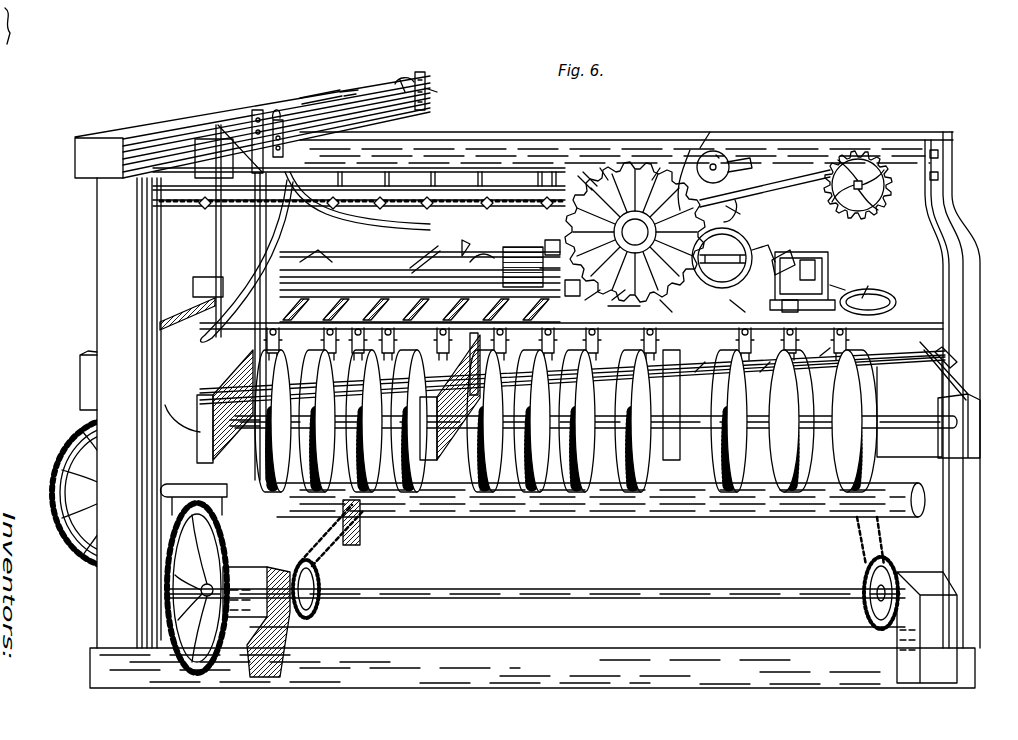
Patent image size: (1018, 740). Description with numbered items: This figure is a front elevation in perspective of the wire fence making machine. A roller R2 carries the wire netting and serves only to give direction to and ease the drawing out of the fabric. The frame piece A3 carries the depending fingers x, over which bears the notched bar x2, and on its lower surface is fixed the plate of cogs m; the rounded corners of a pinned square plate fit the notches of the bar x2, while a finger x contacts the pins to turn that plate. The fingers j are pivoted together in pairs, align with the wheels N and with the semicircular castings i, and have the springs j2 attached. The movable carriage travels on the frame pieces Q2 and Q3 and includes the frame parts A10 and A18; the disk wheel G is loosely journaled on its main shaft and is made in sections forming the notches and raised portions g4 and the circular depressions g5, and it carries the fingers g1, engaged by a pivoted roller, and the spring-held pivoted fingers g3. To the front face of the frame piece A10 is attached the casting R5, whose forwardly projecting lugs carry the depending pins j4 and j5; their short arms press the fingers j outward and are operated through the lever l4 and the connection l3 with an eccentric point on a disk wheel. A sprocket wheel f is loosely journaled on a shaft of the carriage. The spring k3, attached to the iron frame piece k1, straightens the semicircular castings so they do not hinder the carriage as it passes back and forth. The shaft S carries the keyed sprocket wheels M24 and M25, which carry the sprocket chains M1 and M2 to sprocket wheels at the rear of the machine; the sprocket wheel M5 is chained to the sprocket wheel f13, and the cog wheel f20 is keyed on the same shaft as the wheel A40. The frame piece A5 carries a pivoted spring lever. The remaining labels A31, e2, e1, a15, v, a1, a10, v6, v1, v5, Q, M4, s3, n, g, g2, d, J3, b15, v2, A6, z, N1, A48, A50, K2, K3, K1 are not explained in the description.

The frame A31 is at (525, 382).
The frame piece A3 is at (487, 152).
The main frame part of carriage A18 is at (965, 242).
The depending fingers x is at (483, 176).
The notched bar x2 is at (508, 198).
The bracket e2 is at (256, 126).
The link e1 is at (214, 238).
The arm a15 is at (248, 252).
The plate v is at (281, 110).
The bar a1 is at (310, 100).
The clamp a10 is at (350, 92).
The hook v6 is at (402, 82).
The bracket v1 is at (427, 103).
The pin v5 is at (440, 83).
The wheel A40 is at (370, 242).
The frame piece Q3 is at (420, 263).
The cog wheel f20 is at (316, 261).
The bar Q is at (420, 302).
The semicircular castings i is at (416, 301).
The plate of cogs m is at (434, 250).
The pawl M4 is at (468, 240).
The sprocket wheel f is at (490, 257).
The stop s3 is at (547, 241).
The frame piece of carriage A10 is at (523, 276).
The arm n is at (547, 277).
The disk wheel G is at (635, 232).
The teeth g is at (609, 162).
The notches and raised portions g4 is at (631, 224).
The fingers g1 is at (684, 180).
The arm g2 is at (669, 307).
The block d is at (582, 293).
The circular depressions g5 is at (702, 158).
The disc J3 is at (727, 162).
The sprocket chain M2 is at (792, 174).
The sprocket wheel f13 is at (880, 212).
The pivoted fingers g3 is at (722, 280).
The link b15 is at (766, 242).
The connection l3 is at (783, 251).
The lever l4 is at (813, 253).
The casting R5 is at (832, 272).
The depending pin j4 is at (842, 277).
The iron frame piece k1 is at (872, 281).
The spring k3 is at (897, 300).
The block v2 is at (791, 299).
The depending pin j5 is at (736, 309).
The frame piece Q2 is at (572, 390).
The bearing block A6 is at (975, 432).
The shaft z is at (910, 430).
The fingers j is at (556, 338).
The springs j2 is at (758, 368).
The wheels N is at (862, 430).
The frame piece A5 is at (200, 440).
The sprocket wheel M5 is at (182, 418).
The shaft end N1 is at (255, 435).
The bearing block A48 is at (436, 458).
The bar A50 is at (672, 462).
The roller R2 is at (460, 512).
The shaft S is at (510, 590).
The sprocket wheel M24 is at (340, 575).
The sprocket chain M1 is at (860, 552).
The sprocket wheel M25 is at (893, 570).
The gear K2 is at (170, 580).
The bracket K3 is at (222, 494).
The wheel K1 is at (58, 535).